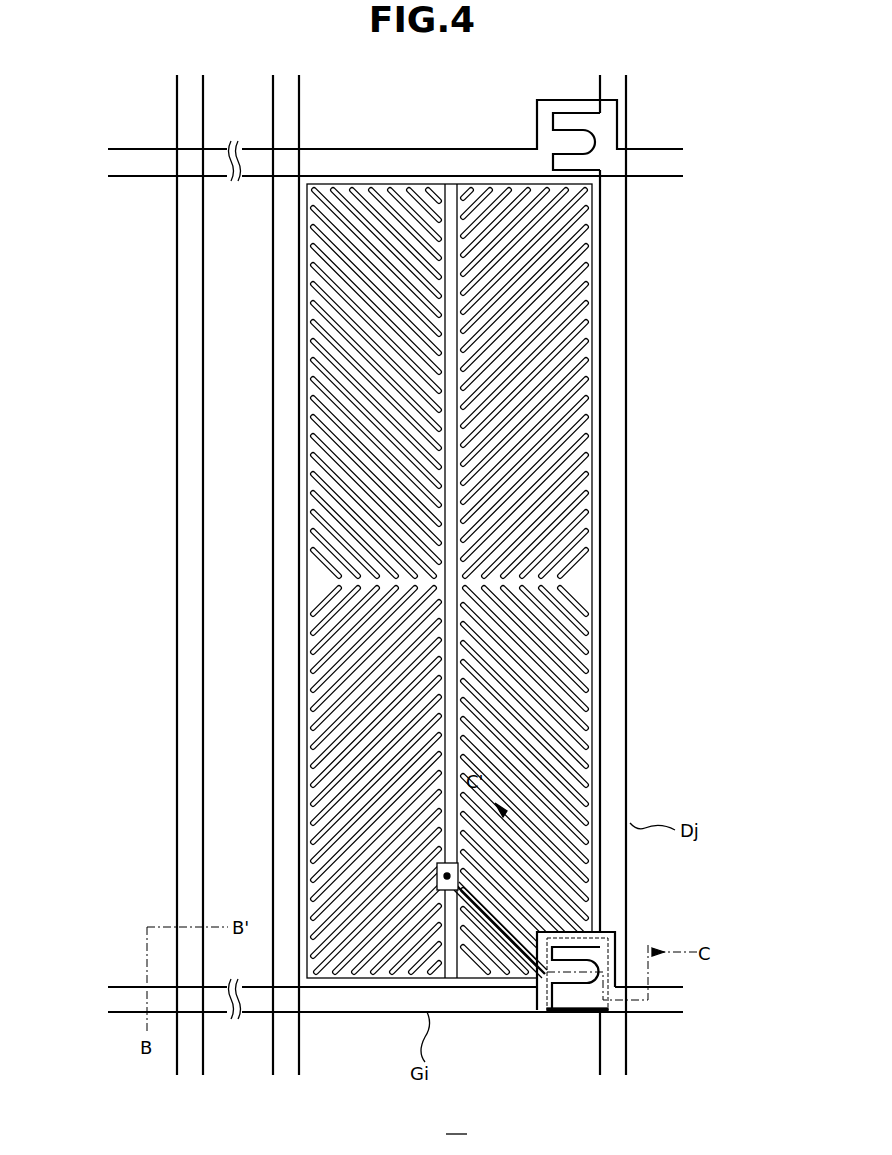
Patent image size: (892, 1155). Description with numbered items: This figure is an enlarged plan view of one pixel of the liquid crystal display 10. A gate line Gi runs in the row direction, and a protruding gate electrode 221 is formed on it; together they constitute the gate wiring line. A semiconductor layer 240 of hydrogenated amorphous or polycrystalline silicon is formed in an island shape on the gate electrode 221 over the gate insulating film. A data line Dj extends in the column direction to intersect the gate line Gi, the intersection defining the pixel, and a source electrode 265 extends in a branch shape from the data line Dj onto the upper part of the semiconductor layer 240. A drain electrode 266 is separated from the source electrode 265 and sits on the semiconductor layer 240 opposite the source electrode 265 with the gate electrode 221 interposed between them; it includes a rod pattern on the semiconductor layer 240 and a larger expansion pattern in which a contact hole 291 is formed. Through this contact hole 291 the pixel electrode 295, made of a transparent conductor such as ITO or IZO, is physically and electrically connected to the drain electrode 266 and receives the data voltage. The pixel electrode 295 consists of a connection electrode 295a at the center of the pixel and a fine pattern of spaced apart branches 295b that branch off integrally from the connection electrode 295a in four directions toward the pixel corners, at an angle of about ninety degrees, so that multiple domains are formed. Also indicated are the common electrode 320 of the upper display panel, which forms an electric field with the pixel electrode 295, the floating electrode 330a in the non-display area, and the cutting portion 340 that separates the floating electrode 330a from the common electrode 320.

The display device pixel 10 is at (457, 1124).
The gate electrode 221 is at (612, 930).
The semiconductor layer 240 is at (615, 1009).
The source electrode 265 is at (565, 1013).
The drain electrode 266 is at (547, 1001).
The contact hole 291 is at (435, 879).
The pixel electrode 295 is at (530, 581).
The connection electrode 295a is at (448, 578).
The fine pattern of branches 295b is at (588, 498).
The common electrode 320 is at (200, 655).
The floating electrode 330a is at (178, 717).
The cutting portion 340 is at (188, 775).